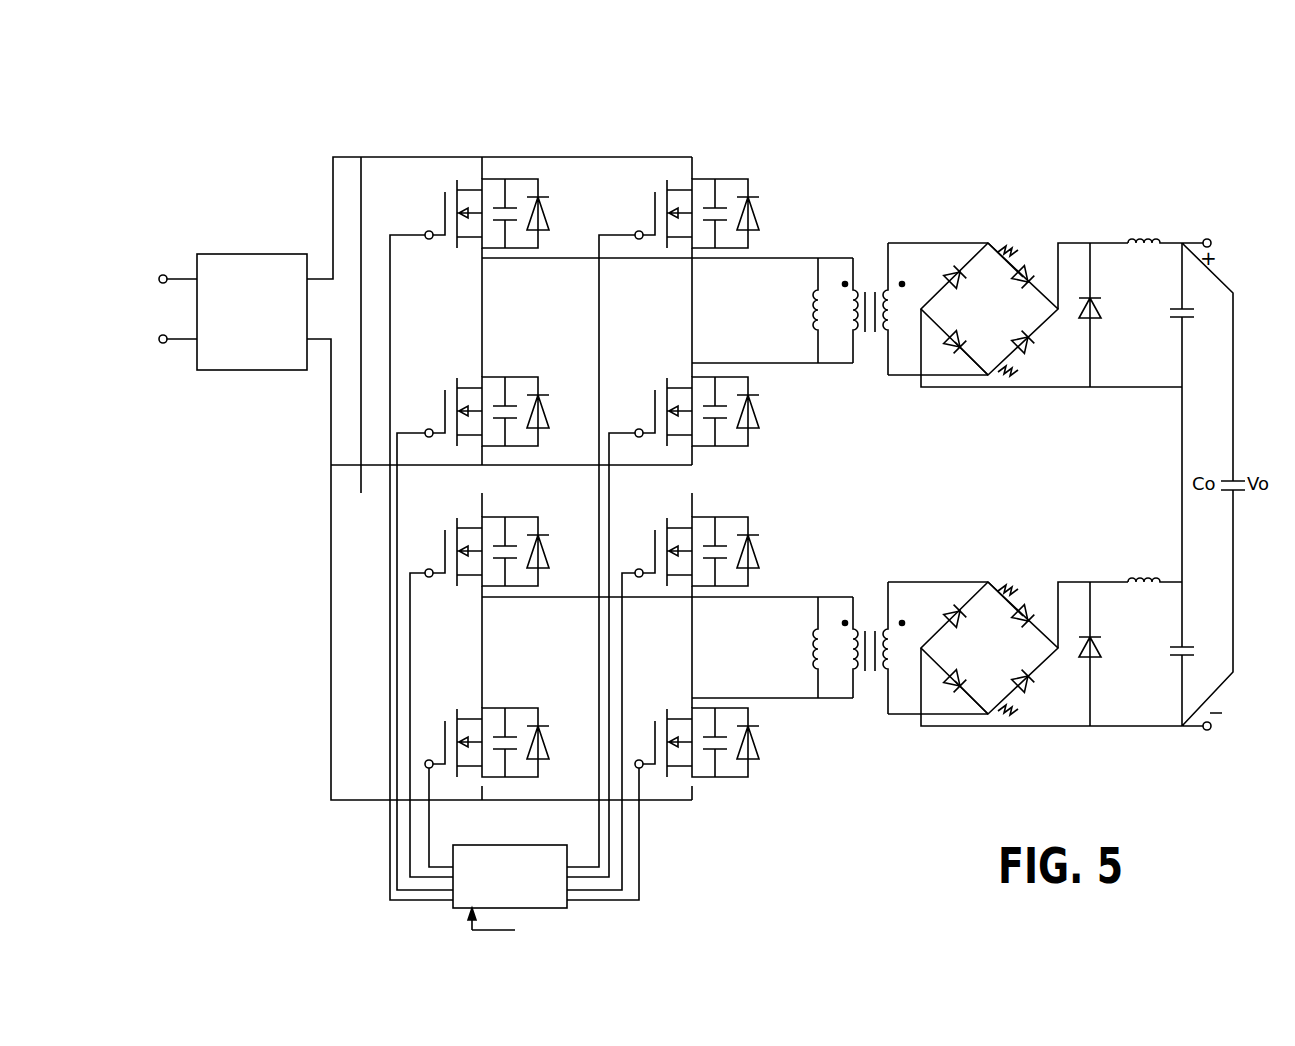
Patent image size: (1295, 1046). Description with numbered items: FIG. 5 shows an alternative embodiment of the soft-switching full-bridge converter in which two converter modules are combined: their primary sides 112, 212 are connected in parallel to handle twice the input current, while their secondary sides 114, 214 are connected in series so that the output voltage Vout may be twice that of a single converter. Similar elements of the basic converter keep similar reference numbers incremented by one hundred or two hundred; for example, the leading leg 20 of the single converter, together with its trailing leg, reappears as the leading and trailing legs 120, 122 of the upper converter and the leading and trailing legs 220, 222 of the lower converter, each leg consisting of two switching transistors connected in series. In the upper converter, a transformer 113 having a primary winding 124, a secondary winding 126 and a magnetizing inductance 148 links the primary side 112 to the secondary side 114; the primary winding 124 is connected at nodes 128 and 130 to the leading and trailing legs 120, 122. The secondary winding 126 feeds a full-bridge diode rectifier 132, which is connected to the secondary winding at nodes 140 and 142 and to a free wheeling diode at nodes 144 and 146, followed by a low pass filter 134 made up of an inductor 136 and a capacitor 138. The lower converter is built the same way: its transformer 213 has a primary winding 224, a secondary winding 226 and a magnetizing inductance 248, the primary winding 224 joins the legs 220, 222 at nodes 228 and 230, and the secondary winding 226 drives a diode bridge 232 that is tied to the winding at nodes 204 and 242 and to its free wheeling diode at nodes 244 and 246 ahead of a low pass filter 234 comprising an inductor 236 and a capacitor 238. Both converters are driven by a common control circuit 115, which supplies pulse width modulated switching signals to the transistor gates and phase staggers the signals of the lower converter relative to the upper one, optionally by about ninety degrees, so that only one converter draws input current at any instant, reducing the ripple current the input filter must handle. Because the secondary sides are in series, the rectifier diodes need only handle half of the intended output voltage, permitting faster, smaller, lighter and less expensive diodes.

The leading leg 20 is at (218, 224).
The primary side 112 is at (576, 247).
The leading leg 120 is at (563, 128).
The trailing leg 122 is at (767, 128).
The node 128 is at (482, 257).
The node 130 is at (692, 362).
The transformer 113 is at (735, 300).
The magnetizing inductance 148 is at (816, 311).
The primary winding 124 is at (856, 340).
The secondary winding 126 is at (884, 340).
The secondary side 114 is at (1046, 278).
The full-bridge rectifier 132 is at (1047, 304).
The node 140 is at (990, 242).
The node 142 is at (989, 377).
The node 144 is at (928, 309).
The node 146 is at (1056, 306).
The low pass filter 134 is at (1132, 281).
The inductor 136 is at (1134, 243).
The capacitor 138 is at (1178, 312).
The control circuit 115 is at (558, 908).
The primary side 212 is at (610, 664).
The leading leg 220 is at (520, 804).
The trailing leg 222 is at (750, 814).
The node 228 is at (482, 598).
The node 230 is at (692, 698).
The transformer 213 is at (735, 639).
The magnetizing inductance 248 is at (816, 650).
The primary winding 224 is at (856, 679).
The secondary winding 226 is at (884, 679).
The secondary side 214 is at (1041, 627).
The full-bridge rectifier 232 is at (1047, 643).
The node 204 is at (990, 581).
The node 242 is at (989, 716).
The node 244 is at (928, 648).
The node 246 is at (1056, 645).
The low pass filter 234 is at (1132, 620).
The inductor 236 is at (1134, 582).
The capacitor 238 is at (1178, 651).